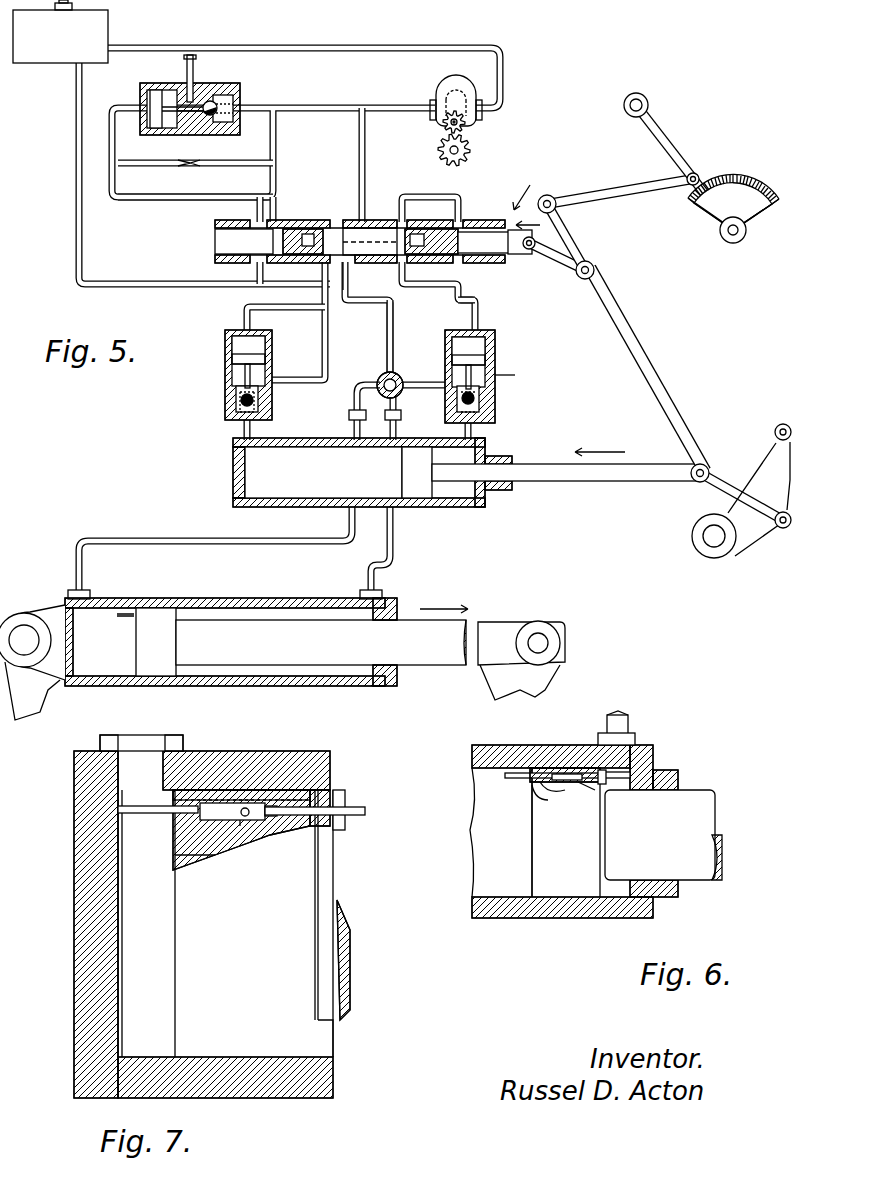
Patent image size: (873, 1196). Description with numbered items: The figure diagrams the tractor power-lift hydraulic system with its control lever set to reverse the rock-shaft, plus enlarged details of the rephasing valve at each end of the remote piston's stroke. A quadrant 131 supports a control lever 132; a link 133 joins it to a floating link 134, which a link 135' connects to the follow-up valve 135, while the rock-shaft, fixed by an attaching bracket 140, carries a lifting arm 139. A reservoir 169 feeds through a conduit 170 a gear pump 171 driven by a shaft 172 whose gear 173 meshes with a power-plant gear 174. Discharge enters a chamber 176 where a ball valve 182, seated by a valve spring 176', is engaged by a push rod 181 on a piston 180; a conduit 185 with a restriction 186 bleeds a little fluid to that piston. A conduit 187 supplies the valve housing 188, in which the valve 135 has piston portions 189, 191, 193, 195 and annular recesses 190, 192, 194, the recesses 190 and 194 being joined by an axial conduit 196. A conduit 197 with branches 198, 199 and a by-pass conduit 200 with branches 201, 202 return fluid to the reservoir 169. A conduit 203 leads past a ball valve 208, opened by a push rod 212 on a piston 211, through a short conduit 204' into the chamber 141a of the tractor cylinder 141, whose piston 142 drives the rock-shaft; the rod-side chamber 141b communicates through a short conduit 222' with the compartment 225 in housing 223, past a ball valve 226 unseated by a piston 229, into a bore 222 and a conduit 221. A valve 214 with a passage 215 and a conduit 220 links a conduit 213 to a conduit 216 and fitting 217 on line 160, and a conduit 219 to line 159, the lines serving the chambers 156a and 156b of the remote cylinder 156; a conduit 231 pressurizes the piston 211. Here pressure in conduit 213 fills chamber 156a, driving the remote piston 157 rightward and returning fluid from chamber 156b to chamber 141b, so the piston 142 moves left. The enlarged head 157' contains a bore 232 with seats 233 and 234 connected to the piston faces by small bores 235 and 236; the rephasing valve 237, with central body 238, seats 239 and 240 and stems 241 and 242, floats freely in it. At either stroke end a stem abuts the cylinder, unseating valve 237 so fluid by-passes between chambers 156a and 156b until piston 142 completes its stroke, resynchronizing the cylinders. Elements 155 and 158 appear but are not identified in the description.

In FIG. 5, the quadrant 131 is at (712, 225).
In FIG. 5, the control lever 132 is at (668, 142).
In FIG. 5, the link 133 is at (610, 190).
In FIG. 5, the floating link 134 is at (640, 350).
In FIG. 5, the valve 135 is at (549, 218).
In FIG. 5, the link 135' is at (548, 250).
In FIG. 5, the lifting arm 139 is at (748, 472).
In FIG. 5, the attaching bracket 140 is at (695, 548).
In FIG. 5, the cylinder 141 is at (450, 514).
In FIG. 5, the chamber 141a is at (285, 490).
In FIG. 5, the chamber 141b is at (488, 504).
In FIG. 5, the piston 142 is at (622, 482).
In FIG. 5, the clevis 155 is at (33, 712).
In FIG. 5, the remote cylinder 156 is at (258, 686).
In FIG. 7, the remote cylinder 156 is at (75, 940).
In FIG. 6, the remote cylinder 156 is at (574, 831).
In FIG. 5, the chamber 156a is at (118, 676).
In FIG. 7, the chamber 156a is at (122, 1023).
In FIG. 6, the chamber 156a is at (485, 877).
In FIG. 5, the chamber 156b is at (392, 688).
In FIG. 6, the chamber 156b is at (617, 890).
In FIG. 5, the remote piston 157 is at (330, 650).
In FIG. 7, the remote piston 157 is at (367, 923).
In FIG. 6, the remote piston 157 is at (681, 811).
In FIG. 7, the enlarged head portion 157' is at (365, 1041).
In FIG. 6, the enlarged head portion 157' is at (520, 859).
In FIG. 5, the clevis 158 is at (568, 672).
In FIG. 5, the conduit 159 is at (400, 560).
In FIG. 6, the conduit 159 is at (632, 715).
In FIG. 5, the conduit 160 is at (143, 537).
In FIG. 7, the conduit 160 is at (180, 745).
In FIG. 5, the liquid reservoir 169 is at (42, 58).
In FIG. 5, the fluid conduit 170 is at (338, 45).
In FIG. 5, the fluid pressure pump 171 is at (437, 92).
In FIG. 5, the projecting shaft 172 is at (470, 122).
In FIG. 5, the gear 173 is at (442, 123).
In FIG. 5, the gear 174 is at (470, 146).
In FIG. 5, the chamber 176 is at (230, 85).
In FIG. 5, the valve spring 176' is at (252, 94).
In FIG. 5, the piston 180 is at (155, 90).
In FIG. 5, the push rod 181 is at (167, 128).
In FIG. 5, the ball valve 182 is at (207, 90).
In FIG. 5, the conduit 185 is at (113, 152).
In FIG. 5, the restriction 186 is at (195, 160).
In FIG. 5, the conduit 187 is at (365, 149).
In FIG. 5, the control valve housing 188 is at (255, 216).
In FIG. 5, the piston portion 189 is at (232, 236).
In FIG. 5, the annular recess portion 190 is at (280, 268).
In FIG. 5, the piston portion 191 is at (360, 262).
In FIG. 5, the annular recess portion 192 is at (372, 229).
In FIG. 5, the piston portion 193 is at (420, 229).
In FIG. 5, the annular recess portion 194 is at (463, 287).
In FIG. 5, the piston portion 195 is at (335, 105).
In FIG. 5, the axially extending conduit 196 is at (308, 229).
In FIG. 5, the conduit 197 is at (220, 197).
In FIG. 5, the branch conduit 198 is at (276, 205).
In FIG. 5, the branch conduit 199 is at (455, 198).
In FIG. 5, the by-pass conduit 200 is at (100, 287).
In FIG. 5, the branch conduit 201 is at (255, 272).
In FIG. 5, the branch conduit 202 is at (462, 270).
In FIG. 5, the conduit 203 is at (322, 362).
In FIG. 5, the short conduit 204' is at (215, 445).
In FIG. 5, the ball valve 208 is at (228, 414).
In FIG. 5, the piston 211 is at (240, 356).
In FIG. 5, the push rod 212 is at (236, 390).
In FIG. 5, the conduit 213 is at (392, 270).
In FIG. 5, the valve 214 is at (405, 368).
In FIG. 5, the passage 215 is at (380, 374).
In FIG. 5, the conduit 216 is at (355, 400).
In FIG. 5, the fitting 217 is at (349, 418).
In FIG. 5, the conduit 219 is at (398, 420).
In FIG. 5, the conduit 220 is at (400, 398).
In FIG. 5, the conduit 221 is at (425, 383).
In FIG. 5, the bore 222 is at (521, 375).
In FIG. 5, the short conduit 222' is at (502, 434).
In FIG. 5, the valve housing 223 is at (495, 340).
In FIG. 5, the valve compartment 225 is at (495, 416).
In FIG. 5, the ball valve 226 is at (490, 398).
In FIG. 5, the piston 229 is at (486, 349).
In FIG. 5, the symmetrical conduit 231 is at (293, 315).
In FIG. 6, the bore 232 is at (550, 790).
In FIG. 7, the valve seat 233 is at (185, 870).
In FIG. 6, the valve seat 233 is at (545, 785).
In FIG. 7, the valve seat 234 is at (295, 790).
In FIG. 6, the valve seat 234 is at (590, 786).
In FIG. 7, the outer bore 235 is at (200, 790).
In FIG. 6, the outer bore 235 is at (530, 785).
In FIG. 7, the small bore 236 is at (330, 765).
In FIG. 6, the small bore 236 is at (605, 782).
In FIG. 7, the valve 237 is at (245, 826).
In FIG. 6, the valve 237 is at (568, 785).
In FIG. 7, the central body portion 238 is at (225, 822).
In FIG. 7, the valve seat 239 is at (178, 838).
In FIG. 7, the valve seat 240 is at (275, 822).
In FIG. 7, the valve stem 241 is at (155, 813).
In FIG. 6, the valve stem 241 is at (520, 768).
In FIG. 7, the valve stem 242 is at (358, 806).
In FIG. 6, the valve stem 242 is at (628, 752).